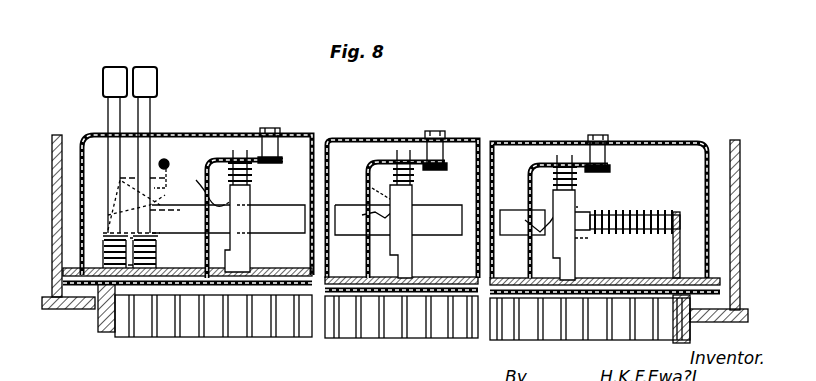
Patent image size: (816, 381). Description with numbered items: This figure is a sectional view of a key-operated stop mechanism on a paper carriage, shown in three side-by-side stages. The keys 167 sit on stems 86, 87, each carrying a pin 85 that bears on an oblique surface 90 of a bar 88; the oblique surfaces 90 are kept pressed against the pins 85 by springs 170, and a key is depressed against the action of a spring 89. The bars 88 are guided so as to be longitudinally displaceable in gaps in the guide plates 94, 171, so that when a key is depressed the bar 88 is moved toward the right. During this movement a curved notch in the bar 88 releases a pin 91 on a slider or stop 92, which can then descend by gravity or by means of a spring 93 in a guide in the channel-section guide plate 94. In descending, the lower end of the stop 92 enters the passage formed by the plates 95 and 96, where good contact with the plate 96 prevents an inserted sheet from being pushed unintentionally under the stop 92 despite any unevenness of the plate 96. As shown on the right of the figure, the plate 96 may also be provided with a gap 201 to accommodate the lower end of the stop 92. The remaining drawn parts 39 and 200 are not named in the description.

The keys 167 is at (143, 70).
The key stem 86 is at (108, 118).
The key stem 87 is at (148, 116).
The pin 85 is at (133, 201).
The oblique surface 90 is at (355, 197).
The spring 89 is at (95, 248).
The spring 39 is at (152, 254).
The guide plate 94 is at (222, 158).
The bar 88 is at (280, 208).
The spring 93 is at (250, 172).
The pin 91 is at (244, 198).
The stop 92 is at (250, 252).
The plate 95 is at (347, 276).
The plate 96 is at (397, 292).
The spring 170 is at (643, 214).
The guide plate 171 is at (672, 265).
The lead 200 is at (560, 292).
The gap 201 is at (565, 292).